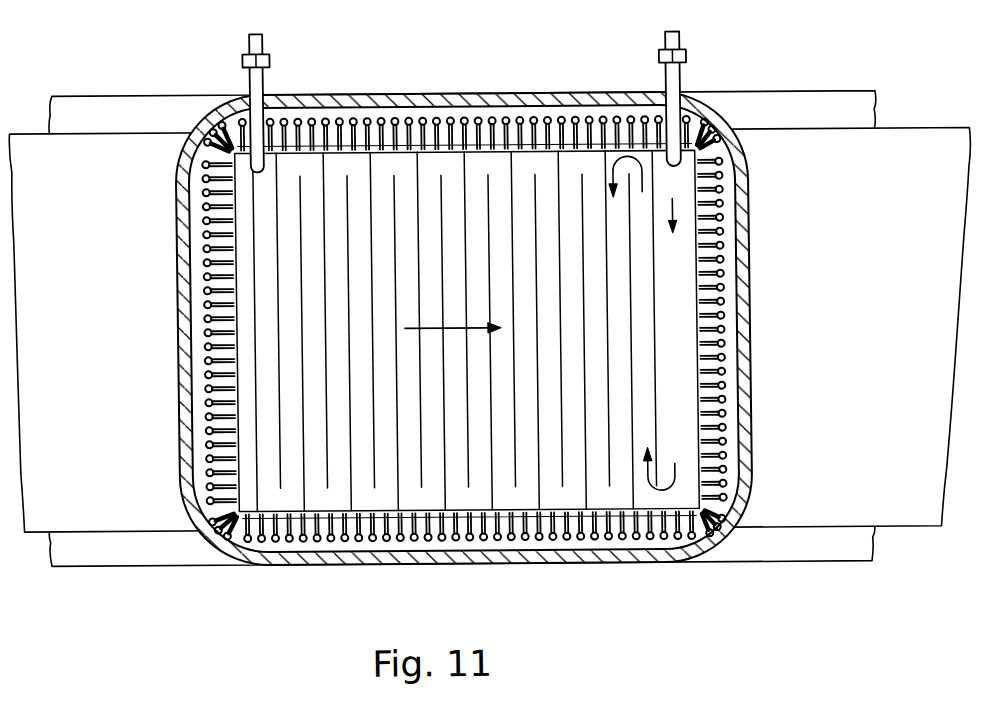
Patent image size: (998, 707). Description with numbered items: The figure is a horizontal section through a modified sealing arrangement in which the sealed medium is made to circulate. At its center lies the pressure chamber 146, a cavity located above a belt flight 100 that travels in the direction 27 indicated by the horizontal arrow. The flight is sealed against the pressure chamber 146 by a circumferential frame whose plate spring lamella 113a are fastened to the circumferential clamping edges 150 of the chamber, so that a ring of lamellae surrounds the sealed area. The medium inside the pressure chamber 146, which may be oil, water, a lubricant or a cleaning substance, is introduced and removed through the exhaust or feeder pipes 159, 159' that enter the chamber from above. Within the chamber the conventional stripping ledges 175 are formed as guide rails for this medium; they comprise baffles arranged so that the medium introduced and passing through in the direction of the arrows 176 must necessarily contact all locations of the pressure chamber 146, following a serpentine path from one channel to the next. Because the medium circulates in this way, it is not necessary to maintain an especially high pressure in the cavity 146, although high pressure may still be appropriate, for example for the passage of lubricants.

The belt flight 100 is at (892, 497).
The plate spring lamella 113a is at (404, 128).
The pressure chamber 146 is at (676, 290).
The circumferential clamping edges 150 is at (186, 272).
The exhaust or feeder pipe 159 is at (733, 99).
The exhaust or feeder pipe 159' is at (214, 94).
The stripping ledges 175 is at (627, 228).
The arrows 176 is at (613, 158).
The direction 27 is at (447, 330).